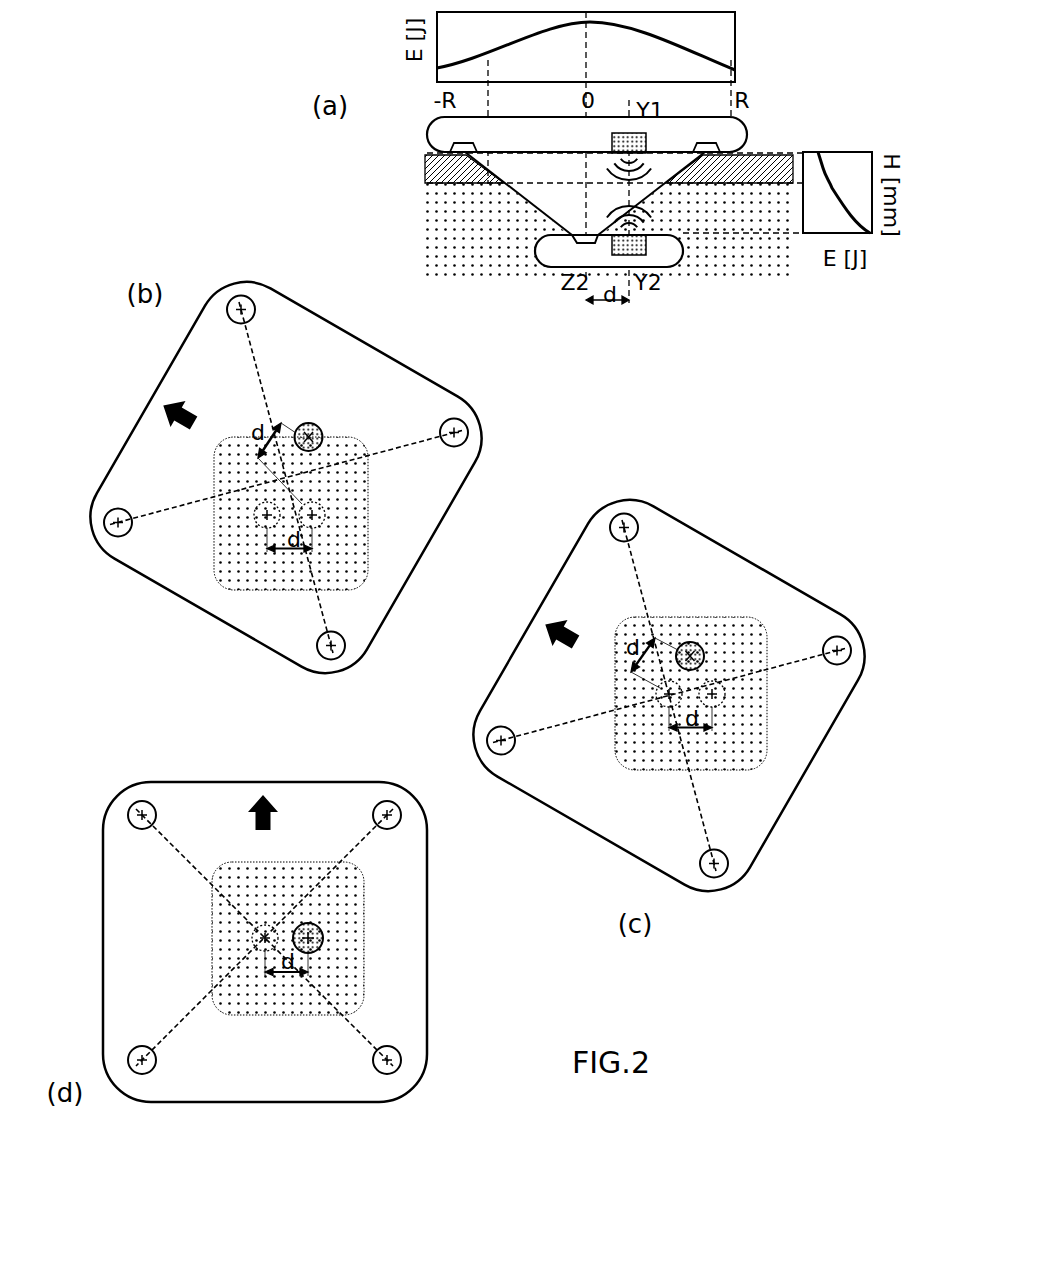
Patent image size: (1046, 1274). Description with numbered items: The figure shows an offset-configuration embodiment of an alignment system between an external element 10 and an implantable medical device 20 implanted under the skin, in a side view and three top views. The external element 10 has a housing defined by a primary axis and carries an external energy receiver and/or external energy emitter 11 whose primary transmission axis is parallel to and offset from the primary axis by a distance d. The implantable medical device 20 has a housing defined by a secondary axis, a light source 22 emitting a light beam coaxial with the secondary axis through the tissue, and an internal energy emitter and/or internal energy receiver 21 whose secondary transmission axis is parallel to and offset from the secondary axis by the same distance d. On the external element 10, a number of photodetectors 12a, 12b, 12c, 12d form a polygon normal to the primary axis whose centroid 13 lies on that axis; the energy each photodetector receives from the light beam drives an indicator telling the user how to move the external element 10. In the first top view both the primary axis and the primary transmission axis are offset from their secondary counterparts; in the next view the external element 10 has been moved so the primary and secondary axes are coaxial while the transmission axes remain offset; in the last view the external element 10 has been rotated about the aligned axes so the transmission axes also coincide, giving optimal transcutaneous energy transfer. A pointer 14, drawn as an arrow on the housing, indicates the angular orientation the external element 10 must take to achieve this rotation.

The external element 10 is at (427, 133).
The external energy receiver and/or external energy emitter 11 is at (573, 152).
The photodetector 12a is at (464, 146).
The photodetector 12b is at (256, 305).
The photodetector 12c is at (722, 147).
The photodetector 12d is at (318, 655).
The centroid 13 is at (573, 152).
The pointer 14 is at (156, 406).
The implantable medical device 20 is at (537, 258).
The internal energy emitter and/or internal energy receiver 21 is at (648, 246).
The light source 22 is at (573, 243).